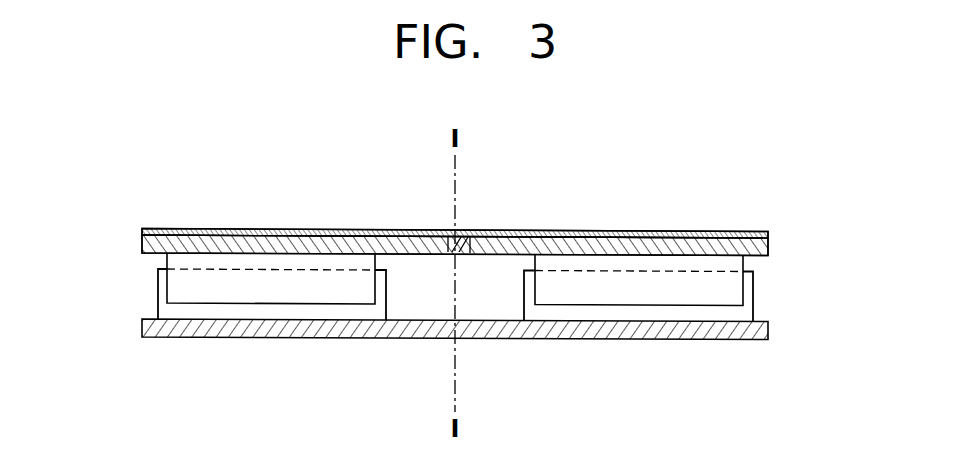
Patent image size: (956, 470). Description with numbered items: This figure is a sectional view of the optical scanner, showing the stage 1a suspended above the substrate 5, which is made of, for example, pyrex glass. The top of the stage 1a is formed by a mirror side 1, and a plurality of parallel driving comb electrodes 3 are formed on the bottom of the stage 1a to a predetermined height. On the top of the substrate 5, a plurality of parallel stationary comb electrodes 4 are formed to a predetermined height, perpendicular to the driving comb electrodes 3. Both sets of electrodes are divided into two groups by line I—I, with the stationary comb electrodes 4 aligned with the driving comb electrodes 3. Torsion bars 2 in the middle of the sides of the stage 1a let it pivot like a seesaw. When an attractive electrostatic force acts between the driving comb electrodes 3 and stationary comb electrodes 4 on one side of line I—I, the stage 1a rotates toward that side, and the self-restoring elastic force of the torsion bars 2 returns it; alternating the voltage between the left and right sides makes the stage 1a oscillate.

The mirror side 1 is at (703, 231).
The stage 1a is at (769, 248).
The torsion bar 2 is at (469, 234).
The driving comb electrode 3 is at (171, 267).
The stationary comb electrode 4 is at (163, 298).
The substrate 5 is at (769, 334).